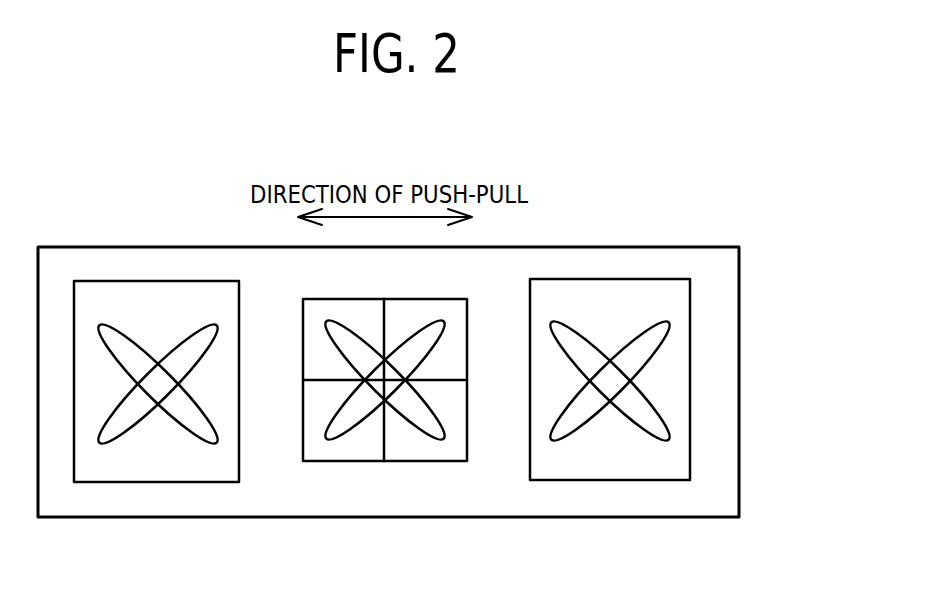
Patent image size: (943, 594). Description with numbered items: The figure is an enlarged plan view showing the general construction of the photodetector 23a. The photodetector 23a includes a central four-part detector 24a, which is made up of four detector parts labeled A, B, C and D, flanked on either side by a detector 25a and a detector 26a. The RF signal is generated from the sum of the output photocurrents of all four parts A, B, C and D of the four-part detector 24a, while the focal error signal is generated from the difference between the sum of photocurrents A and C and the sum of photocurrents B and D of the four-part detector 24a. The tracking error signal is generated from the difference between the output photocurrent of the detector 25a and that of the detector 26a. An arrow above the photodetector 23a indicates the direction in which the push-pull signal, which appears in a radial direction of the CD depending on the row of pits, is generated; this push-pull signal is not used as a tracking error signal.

The photodetector 23a is at (739, 341).
The 4-part detector 24a is at (367, 467).
The detector 25a is at (145, 470).
The detector 26a is at (618, 472).